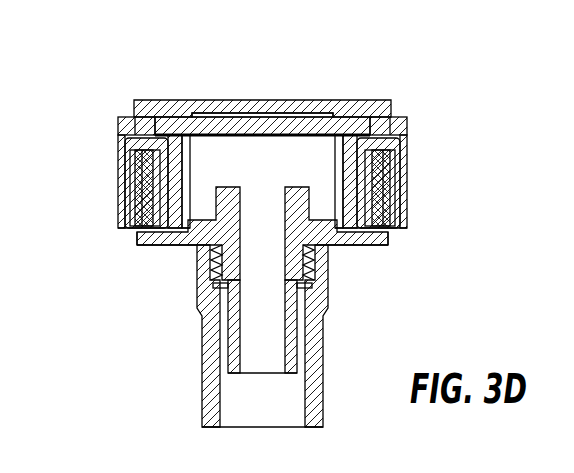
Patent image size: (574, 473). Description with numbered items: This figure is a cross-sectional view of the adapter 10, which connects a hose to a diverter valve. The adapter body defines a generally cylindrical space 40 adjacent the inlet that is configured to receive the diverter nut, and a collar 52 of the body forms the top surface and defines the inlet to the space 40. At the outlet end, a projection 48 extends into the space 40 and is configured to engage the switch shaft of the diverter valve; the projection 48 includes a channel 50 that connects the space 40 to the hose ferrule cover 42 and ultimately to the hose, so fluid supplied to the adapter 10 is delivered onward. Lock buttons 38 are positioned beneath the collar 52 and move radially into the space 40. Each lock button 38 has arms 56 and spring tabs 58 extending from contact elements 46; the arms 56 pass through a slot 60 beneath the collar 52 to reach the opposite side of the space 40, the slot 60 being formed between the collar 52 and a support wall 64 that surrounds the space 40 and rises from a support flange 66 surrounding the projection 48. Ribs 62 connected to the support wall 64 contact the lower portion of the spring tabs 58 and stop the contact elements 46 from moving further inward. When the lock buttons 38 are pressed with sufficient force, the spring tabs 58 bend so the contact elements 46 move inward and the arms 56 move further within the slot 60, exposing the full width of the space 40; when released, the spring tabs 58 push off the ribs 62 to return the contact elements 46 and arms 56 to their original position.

The adapter 10 is at (141, 41).
The lock buttons 38 is at (118, 140).
The space 40 is at (263, 160).
The hose ferrule cover 42 is at (315, 345).
The contact elements 46 is at (118, 173).
The projection 48 is at (293, 205).
The channel 50 is at (267, 317).
The collar 52 is at (357, 100).
The arms 56 is at (188, 115).
The spring tabs 58 is at (157, 210).
The slot 60 is at (133, 117).
The ribs 62 is at (135, 238).
The support wall 64 is at (180, 167).
The support flange 66 is at (172, 245).